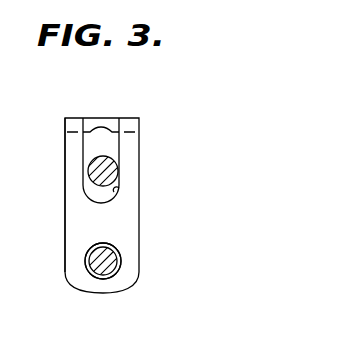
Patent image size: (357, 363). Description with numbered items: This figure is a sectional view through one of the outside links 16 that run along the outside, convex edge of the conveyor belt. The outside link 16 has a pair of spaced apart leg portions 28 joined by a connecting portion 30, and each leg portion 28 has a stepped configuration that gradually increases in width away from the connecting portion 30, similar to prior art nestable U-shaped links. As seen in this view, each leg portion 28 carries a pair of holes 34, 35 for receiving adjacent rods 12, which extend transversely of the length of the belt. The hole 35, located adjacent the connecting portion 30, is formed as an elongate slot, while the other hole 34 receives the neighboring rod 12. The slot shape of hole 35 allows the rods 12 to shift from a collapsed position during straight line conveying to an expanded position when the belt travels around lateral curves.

The outside link 16 is at (162, 121).
The leg portion 28 is at (75, 218).
The connecting portion 30 is at (92, 118).
The hole 35 is at (117, 188).
The rod 12 is at (93, 171).
The hole 34 is at (118, 250).